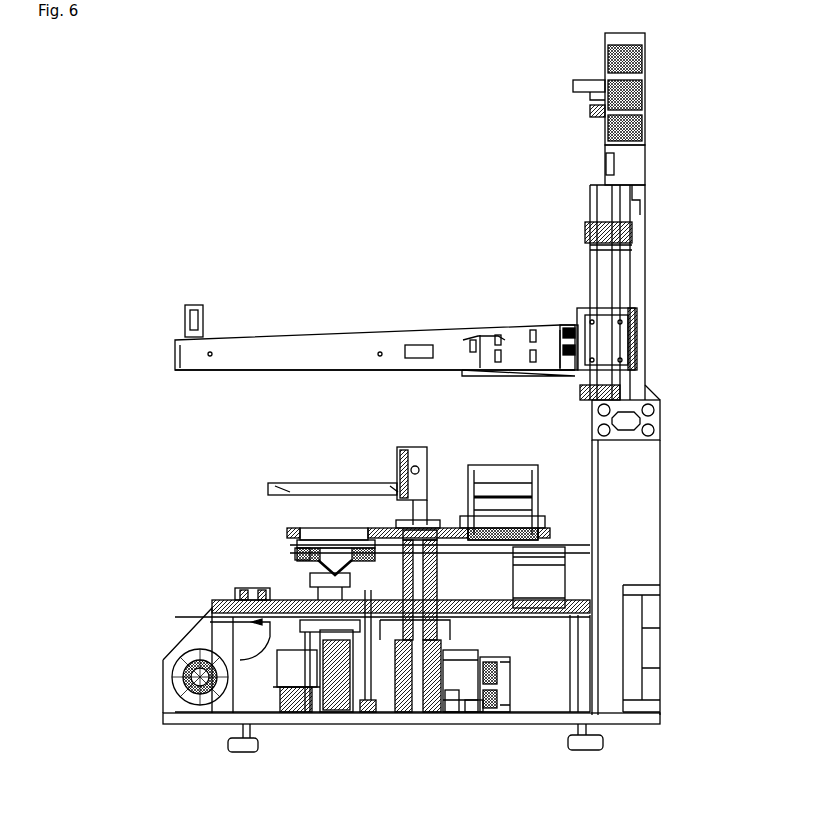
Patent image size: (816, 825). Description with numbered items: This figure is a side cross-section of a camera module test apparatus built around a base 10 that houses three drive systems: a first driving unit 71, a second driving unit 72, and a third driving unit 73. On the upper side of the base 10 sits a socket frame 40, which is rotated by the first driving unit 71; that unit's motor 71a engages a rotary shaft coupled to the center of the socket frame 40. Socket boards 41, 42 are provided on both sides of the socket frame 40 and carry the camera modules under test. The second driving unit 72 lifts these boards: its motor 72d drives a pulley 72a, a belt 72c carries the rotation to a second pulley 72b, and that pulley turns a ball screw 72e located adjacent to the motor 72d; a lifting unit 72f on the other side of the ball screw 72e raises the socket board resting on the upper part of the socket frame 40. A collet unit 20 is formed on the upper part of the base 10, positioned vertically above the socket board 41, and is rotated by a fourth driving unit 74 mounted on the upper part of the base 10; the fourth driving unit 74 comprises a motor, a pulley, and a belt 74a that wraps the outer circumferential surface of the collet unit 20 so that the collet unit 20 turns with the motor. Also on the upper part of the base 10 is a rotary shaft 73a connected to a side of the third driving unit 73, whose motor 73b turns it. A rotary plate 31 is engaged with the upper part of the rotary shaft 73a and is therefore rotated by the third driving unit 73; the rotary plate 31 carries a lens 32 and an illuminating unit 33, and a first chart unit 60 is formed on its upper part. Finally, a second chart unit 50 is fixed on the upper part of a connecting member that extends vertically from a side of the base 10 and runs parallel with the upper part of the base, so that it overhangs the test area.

The base 10 is at (150, 673).
The collet unit 20 is at (300, 540).
The rotary plate 31 is at (442, 530).
The lens 32 is at (307, 533).
The illuminating unit 33 is at (503, 492).
The socket frame 40 is at (212, 608).
The socket board 41 is at (293, 557).
The socket board 42 is at (220, 598).
The second chart unit 50 is at (315, 348).
The first chart unit 60 is at (330, 488).
The first driving unit 71 is at (226, 628).
The motor 71a is at (205, 712).
The second driving unit 72 is at (367, 707).
The pulley 72a is at (318, 712).
The pulley 72b is at (355, 712).
The belt 72c is at (335, 720).
The motor 72d is at (293, 712).
The ball screw 72e is at (452, 713).
The lifting unit 72f is at (297, 577).
The third driving unit 73 is at (480, 707).
The rotary shaft 73a is at (572, 622).
The motor 73b is at (470, 715).
The fourth driving unit 74 is at (574, 556).
The belt 74a is at (578, 505).